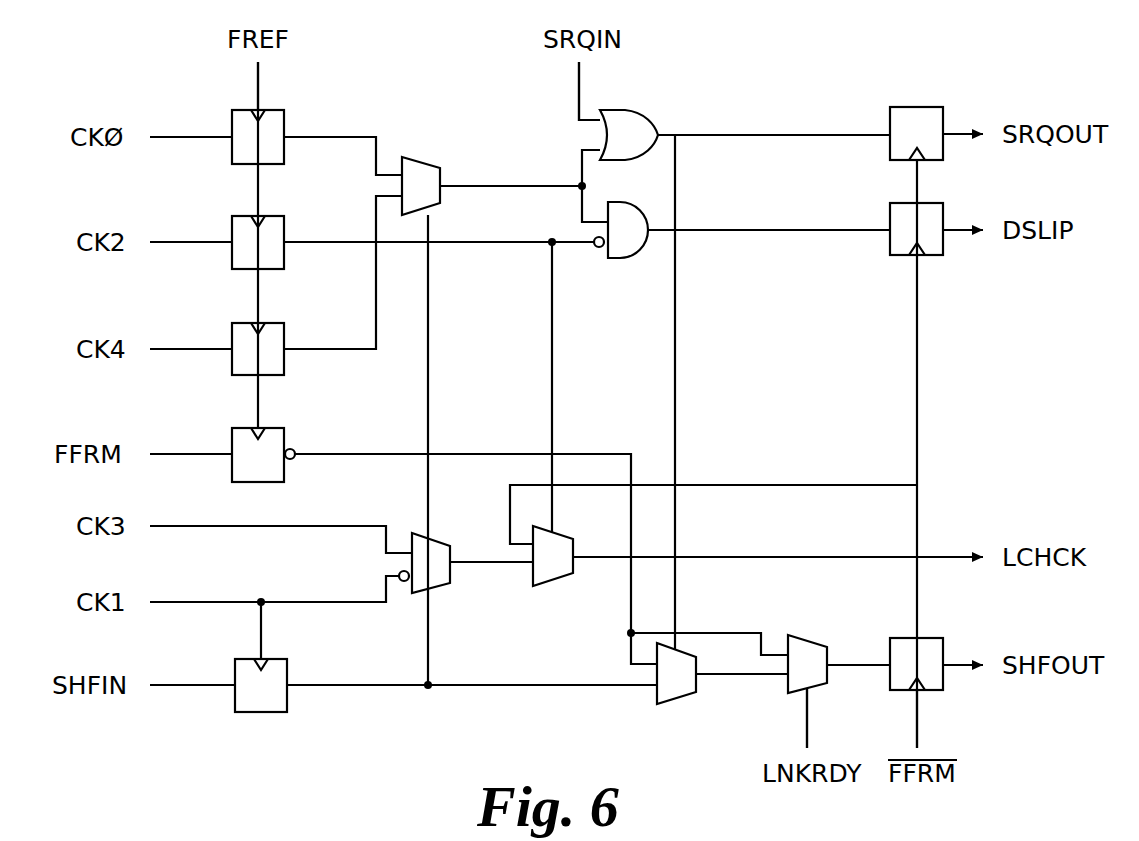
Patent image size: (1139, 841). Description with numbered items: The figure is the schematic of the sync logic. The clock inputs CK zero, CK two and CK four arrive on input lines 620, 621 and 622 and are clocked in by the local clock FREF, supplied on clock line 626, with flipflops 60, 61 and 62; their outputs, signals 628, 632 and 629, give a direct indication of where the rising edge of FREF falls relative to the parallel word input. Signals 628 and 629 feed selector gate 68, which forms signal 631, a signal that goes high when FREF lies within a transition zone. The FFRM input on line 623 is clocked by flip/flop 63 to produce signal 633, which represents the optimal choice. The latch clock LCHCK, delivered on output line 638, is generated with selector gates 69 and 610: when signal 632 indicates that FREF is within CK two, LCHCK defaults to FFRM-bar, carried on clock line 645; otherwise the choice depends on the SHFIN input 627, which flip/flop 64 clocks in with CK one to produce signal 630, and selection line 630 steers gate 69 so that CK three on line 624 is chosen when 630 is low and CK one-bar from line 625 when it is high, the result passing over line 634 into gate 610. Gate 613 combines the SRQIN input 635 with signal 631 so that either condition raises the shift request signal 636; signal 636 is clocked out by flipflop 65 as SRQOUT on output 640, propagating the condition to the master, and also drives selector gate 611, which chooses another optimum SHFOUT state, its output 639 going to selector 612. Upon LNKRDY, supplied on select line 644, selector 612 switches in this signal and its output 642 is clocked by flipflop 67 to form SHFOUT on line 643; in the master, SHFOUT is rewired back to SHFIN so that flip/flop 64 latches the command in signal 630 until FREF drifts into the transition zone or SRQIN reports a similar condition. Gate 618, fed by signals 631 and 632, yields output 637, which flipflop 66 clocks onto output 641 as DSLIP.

The flipflop 60 is at (283, 127).
The flipflop 61 is at (283, 228).
The flipflop 62 is at (283, 340).
The flip/flop 63 is at (283, 448).
The flip/flop 64 is at (287, 680).
The SRQOUT output flip-flop 65 is at (924, 113).
The DSLIP output flip-flop 66 is at (924, 208).
The SHFOUT output flip-flop 67 is at (927, 642).
The selector gate 68 is at (430, 173).
The selector gate 69 is at (438, 548).
The selector gate 610 is at (557, 575).
The selector gate 611 is at (680, 693).
The selector 612 is at (813, 650).
The OR gate 613 is at (633, 122).
The AND gate with inverted input 618 is at (618, 258).
The CK0 input line 620 is at (200, 137).
The CK2 input line 621 is at (200, 242).
The CK4 input line 622 is at (200, 349).
The FFRM input line 623 is at (200, 454).
The CK3 input line 624 is at (318, 525).
The CK1 input line 625 is at (305, 602).
The FREF clock line 626 is at (257, 73).
The SHFIN input line 627 is at (203, 688).
The signal 628 is at (345, 137).
The signal 629 is at (345, 350).
The signal 630 is at (432, 672).
The signal 631 is at (487, 186).
The signal 632 is at (470, 245).
The signal 633 is at (490, 453).
The multiplexer 69 output line 634 is at (472, 565).
The SRQIN input line 635 is at (577, 80).
The shift request signal 636 is at (760, 132).
The AND gate output line 637 is at (760, 228).
The LCHCK output line 638 is at (760, 556).
The multiplexer 611 output line 639 is at (723, 677).
The SRQOUT output line 640 is at (957, 132).
The DSLIP output line 641 is at (957, 228).
The multiplexer 612 output line 642 is at (835, 667).
The SHFOUT output line 643 is at (957, 663).
The LNKRDY select line 644 is at (810, 707).
The inverted FFRM clock line 645 is at (922, 702).